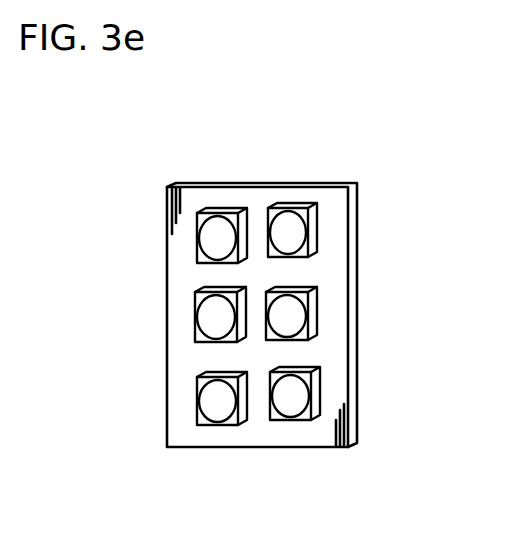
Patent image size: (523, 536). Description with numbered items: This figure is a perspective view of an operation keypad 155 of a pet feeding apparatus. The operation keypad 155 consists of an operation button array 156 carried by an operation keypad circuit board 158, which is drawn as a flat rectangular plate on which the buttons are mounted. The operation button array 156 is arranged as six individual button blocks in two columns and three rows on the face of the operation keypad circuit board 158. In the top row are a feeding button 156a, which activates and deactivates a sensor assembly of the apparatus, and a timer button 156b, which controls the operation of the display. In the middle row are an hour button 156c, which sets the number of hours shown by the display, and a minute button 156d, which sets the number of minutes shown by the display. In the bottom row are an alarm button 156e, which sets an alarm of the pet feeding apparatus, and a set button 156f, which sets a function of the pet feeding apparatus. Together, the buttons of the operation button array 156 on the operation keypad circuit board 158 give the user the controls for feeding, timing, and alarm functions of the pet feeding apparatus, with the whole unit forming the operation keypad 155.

The operation keypad 155 is at (245, 292).
The operation button array 156 is at (250, 255).
The feeding button 156a is at (212, 238).
The timer button 156b is at (288, 235).
The hour button 156c is at (212, 314).
The minute button 156d is at (290, 314).
The alarm button 156e is at (210, 401).
The set button 156f is at (292, 392).
The operation keypad circuit board 158 is at (255, 430).